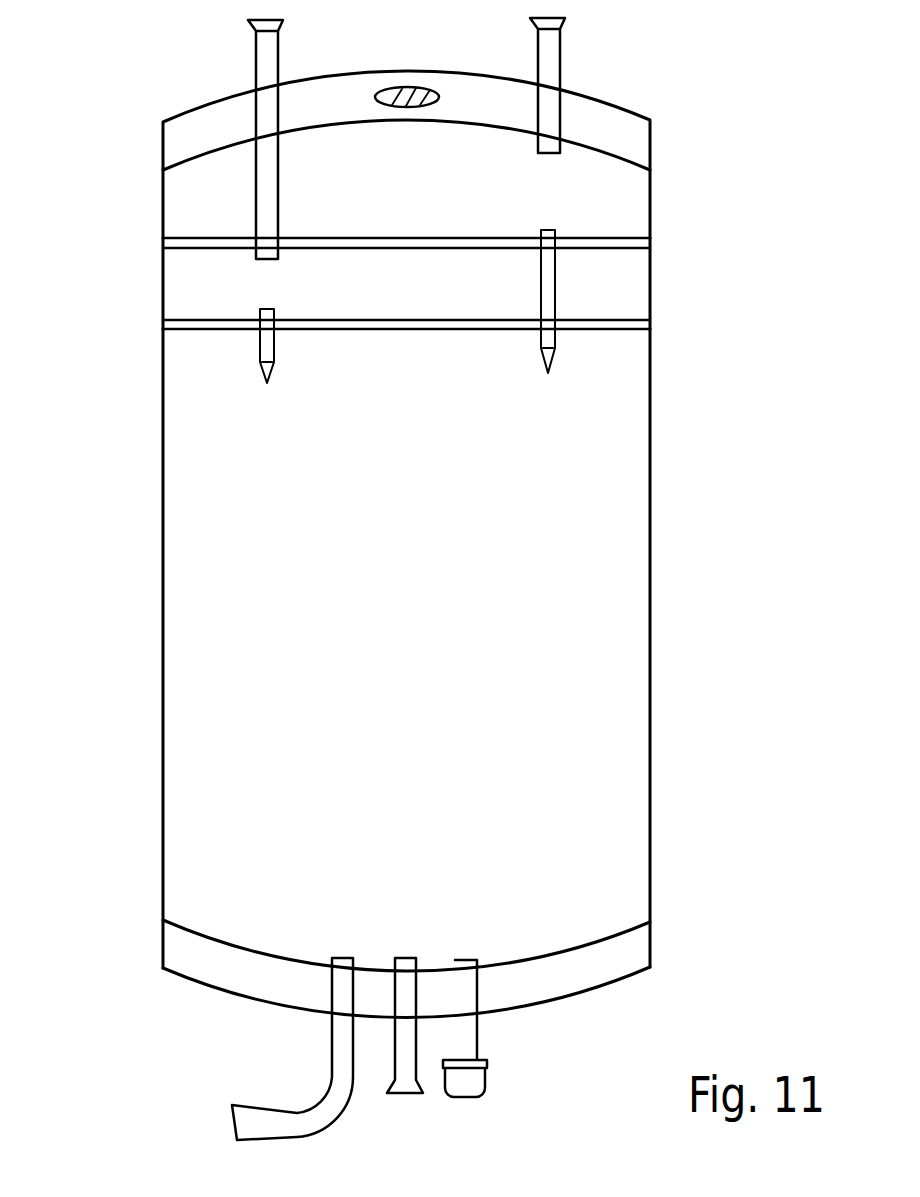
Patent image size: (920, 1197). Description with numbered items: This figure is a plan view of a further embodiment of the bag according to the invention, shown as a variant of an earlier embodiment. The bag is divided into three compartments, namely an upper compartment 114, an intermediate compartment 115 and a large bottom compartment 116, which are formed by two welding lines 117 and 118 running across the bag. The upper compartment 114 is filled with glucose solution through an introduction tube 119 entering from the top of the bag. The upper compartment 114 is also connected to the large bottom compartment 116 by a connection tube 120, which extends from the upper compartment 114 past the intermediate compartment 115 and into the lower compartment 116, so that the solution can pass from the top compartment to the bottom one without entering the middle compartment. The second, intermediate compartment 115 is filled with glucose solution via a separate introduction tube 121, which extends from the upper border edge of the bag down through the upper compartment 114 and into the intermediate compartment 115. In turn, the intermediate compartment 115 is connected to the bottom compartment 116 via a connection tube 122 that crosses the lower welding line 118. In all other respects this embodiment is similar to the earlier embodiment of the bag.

The upper compartment 114 is at (162, 205).
The intermediate compartment 115 is at (162, 292).
The bottom compartment 116 is at (163, 488).
The welding line 117 is at (632, 237).
The welding line 118 is at (627, 318).
The introduction tube 119 is at (561, 51).
The connection tube 120 is at (555, 343).
The introduction tube 121 is at (255, 55).
The connection tube 122 is at (258, 347).